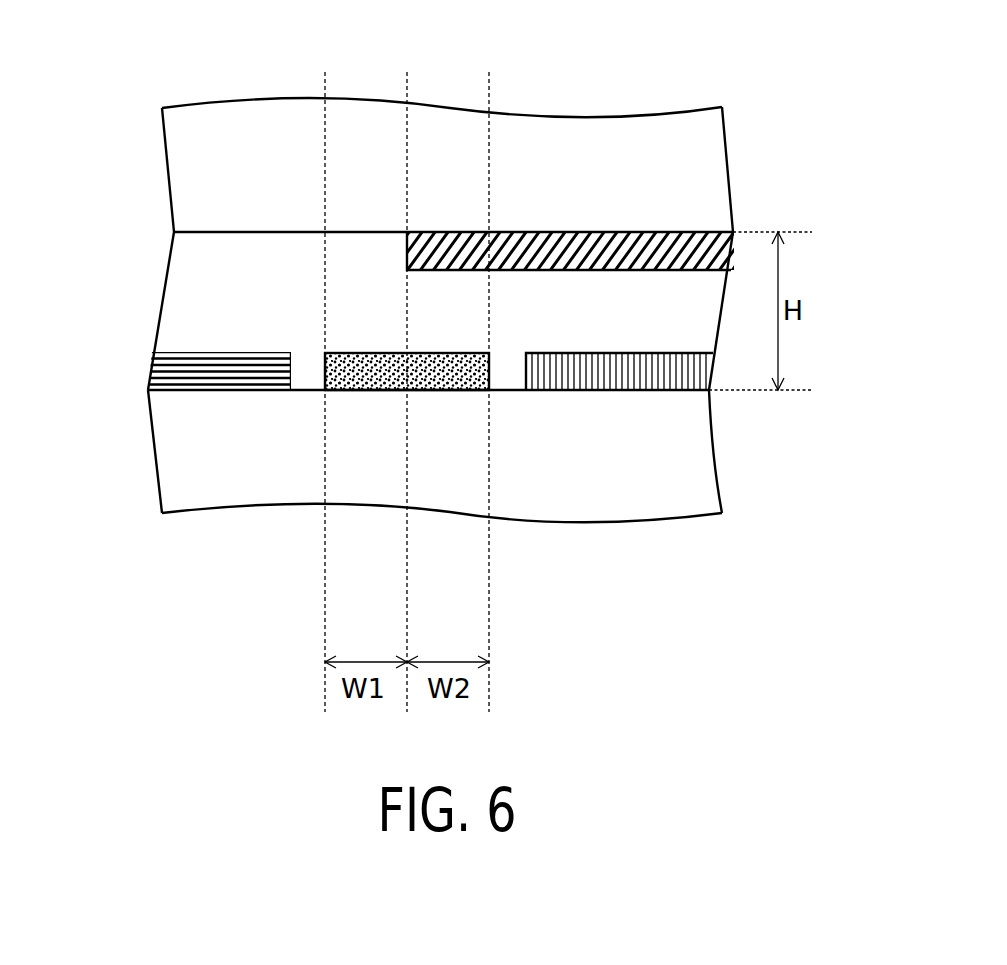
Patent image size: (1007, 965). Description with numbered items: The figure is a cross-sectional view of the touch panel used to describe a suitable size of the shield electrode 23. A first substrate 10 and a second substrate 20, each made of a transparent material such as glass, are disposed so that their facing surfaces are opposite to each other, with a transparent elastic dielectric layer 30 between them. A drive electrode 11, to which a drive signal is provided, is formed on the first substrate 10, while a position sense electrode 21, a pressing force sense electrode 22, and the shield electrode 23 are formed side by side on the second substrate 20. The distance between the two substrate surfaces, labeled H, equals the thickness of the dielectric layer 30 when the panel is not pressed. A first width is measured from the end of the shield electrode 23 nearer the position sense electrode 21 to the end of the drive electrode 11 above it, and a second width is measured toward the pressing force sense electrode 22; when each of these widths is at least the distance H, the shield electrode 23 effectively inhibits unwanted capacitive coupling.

The first substrate 10 is at (677, 130).
The drive electrode 11 is at (557, 253).
The dielectric layer 30 is at (185, 303).
The position sense electrode 21 is at (225, 390).
The shield electrode 23 is at (350, 390).
The pressing force sense electrode 22 is at (648, 390).
The second substrate 20 is at (663, 493).